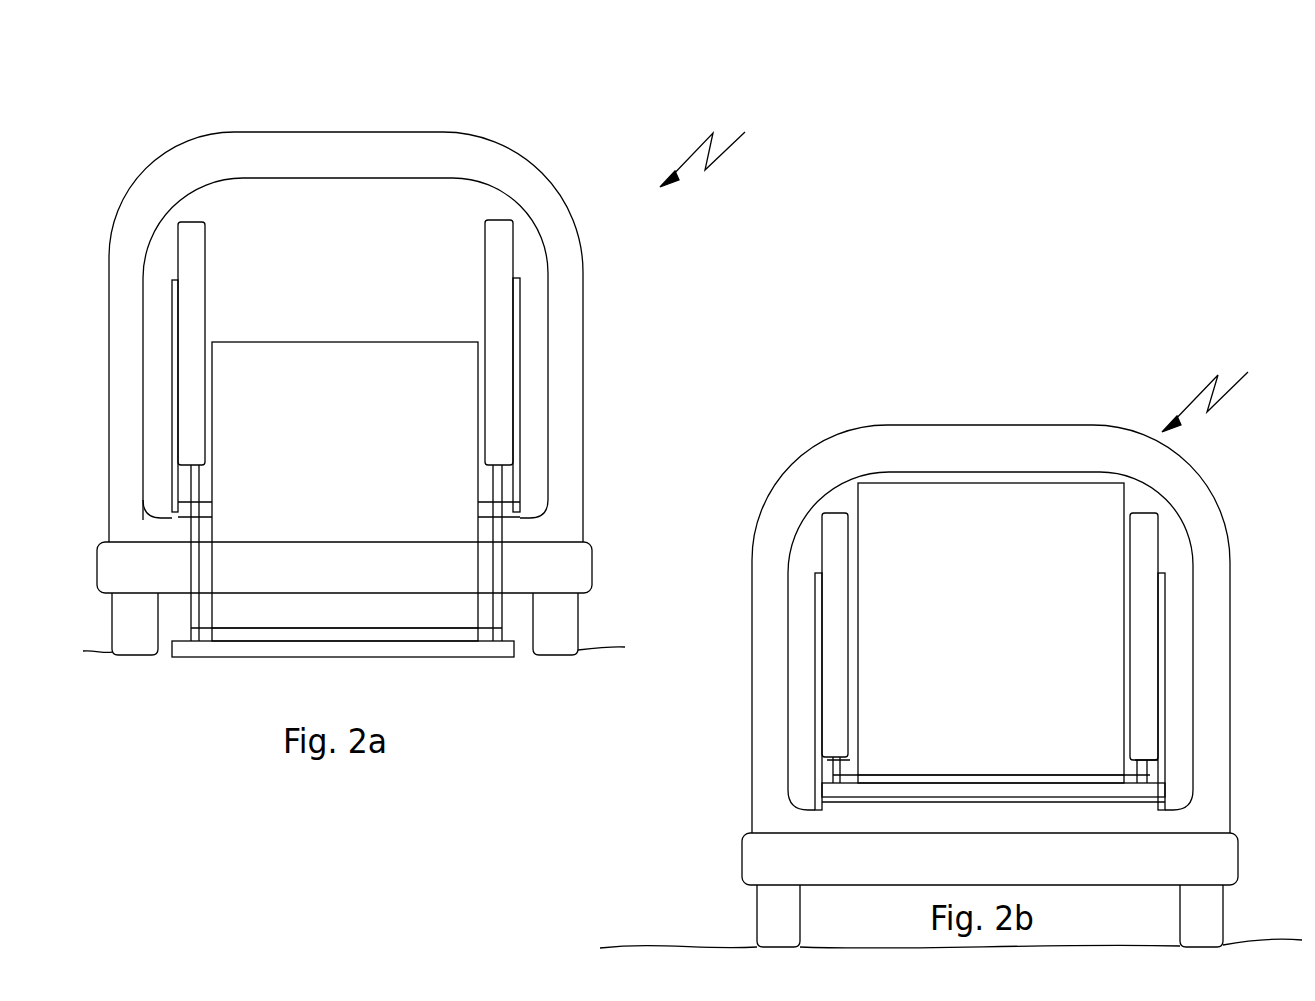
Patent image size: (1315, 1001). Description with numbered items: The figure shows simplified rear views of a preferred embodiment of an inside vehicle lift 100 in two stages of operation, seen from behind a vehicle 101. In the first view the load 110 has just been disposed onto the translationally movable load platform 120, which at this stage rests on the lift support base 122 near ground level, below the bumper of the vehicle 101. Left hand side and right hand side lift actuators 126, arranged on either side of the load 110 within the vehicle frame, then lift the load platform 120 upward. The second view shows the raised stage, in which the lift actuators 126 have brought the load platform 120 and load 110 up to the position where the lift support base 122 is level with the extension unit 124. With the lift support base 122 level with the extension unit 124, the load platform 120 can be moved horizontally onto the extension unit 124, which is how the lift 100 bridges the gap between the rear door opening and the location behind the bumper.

In FIG. 2A, the inside vehicle lift 100 is at (709, 165).
In FIG. 2B, the inside vehicle lift 100 is at (1212, 407).
In FIG. 2A, the vehicle 101 is at (393, 132).
In FIG. 2B, the vehicle 101 is at (1038, 425).
In FIG. 2A, the load 110 is at (363, 598).
In FIG. 2B, the load 110 is at (968, 490).
In FIG. 2A, the load platform 120 is at (202, 635).
In FIG. 2B, the load platform 120 is at (1148, 770).
In FIG. 2A, the lift support base 122 is at (288, 645).
In FIG. 2B, the lift support base 122 is at (1123, 795).
In FIG. 2A, the extension unit 124 is at (505, 500).
In FIG. 2A, the lift actuators 126 is at (195, 222).
In FIG. 2B, the lift actuators 126 is at (820, 537).